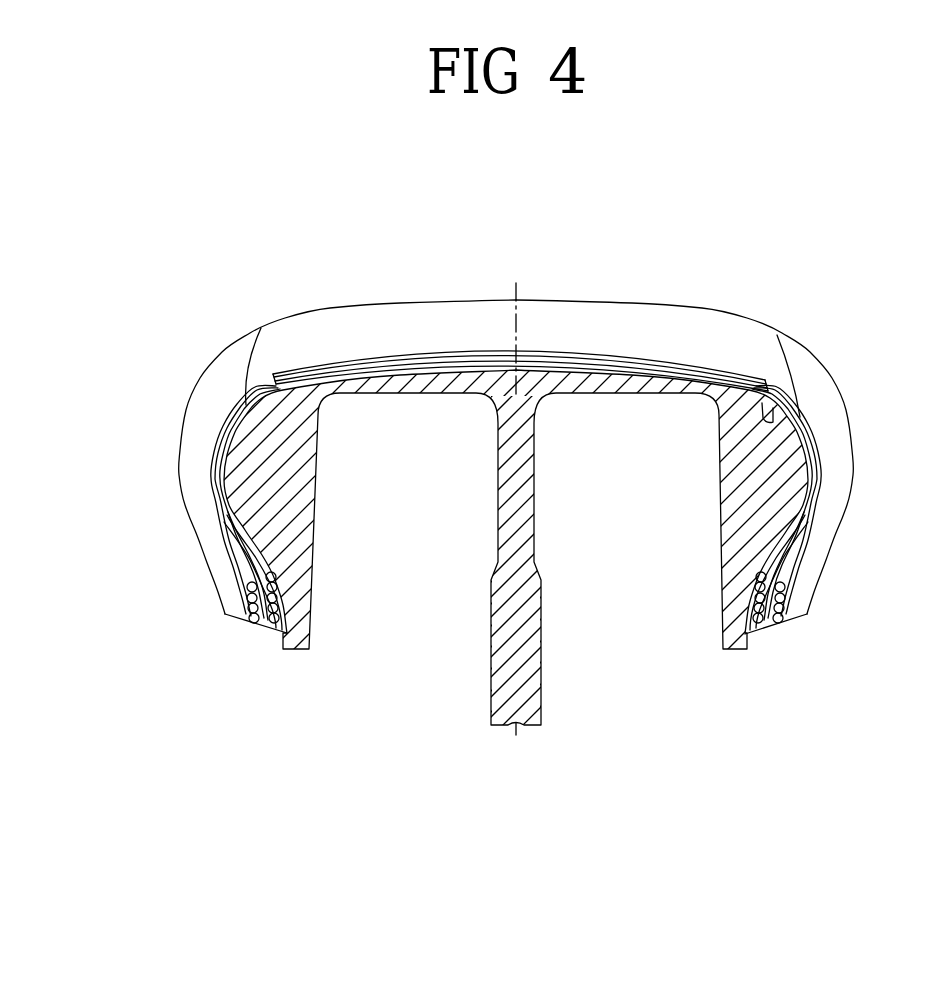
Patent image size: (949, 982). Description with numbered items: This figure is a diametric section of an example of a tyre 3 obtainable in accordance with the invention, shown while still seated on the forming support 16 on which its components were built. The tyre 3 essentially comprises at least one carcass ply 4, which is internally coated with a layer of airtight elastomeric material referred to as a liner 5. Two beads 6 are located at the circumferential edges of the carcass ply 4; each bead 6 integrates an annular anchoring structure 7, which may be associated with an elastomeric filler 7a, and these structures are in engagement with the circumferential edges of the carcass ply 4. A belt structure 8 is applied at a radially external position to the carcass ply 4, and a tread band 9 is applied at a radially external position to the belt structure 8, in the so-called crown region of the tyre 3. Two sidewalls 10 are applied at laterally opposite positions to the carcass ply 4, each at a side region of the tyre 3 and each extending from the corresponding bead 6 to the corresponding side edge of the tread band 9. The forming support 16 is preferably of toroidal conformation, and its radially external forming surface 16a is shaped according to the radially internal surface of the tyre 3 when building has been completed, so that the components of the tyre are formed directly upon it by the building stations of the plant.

The tyre 3 is at (729, 307).
The carcass ply 4 is at (817, 453).
The liner 5 is at (767, 420).
The bead 6 is at (232, 609).
The annular anchoring structure 7 is at (833, 625).
The elastomeric filler 7a is at (777, 570).
The belt structure 8 is at (597, 352).
The tread band 9 is at (416, 318).
The sidewall 10 is at (184, 462).
The forming support 16 is at (302, 555).
The radially external forming surface 16a is at (246, 408).